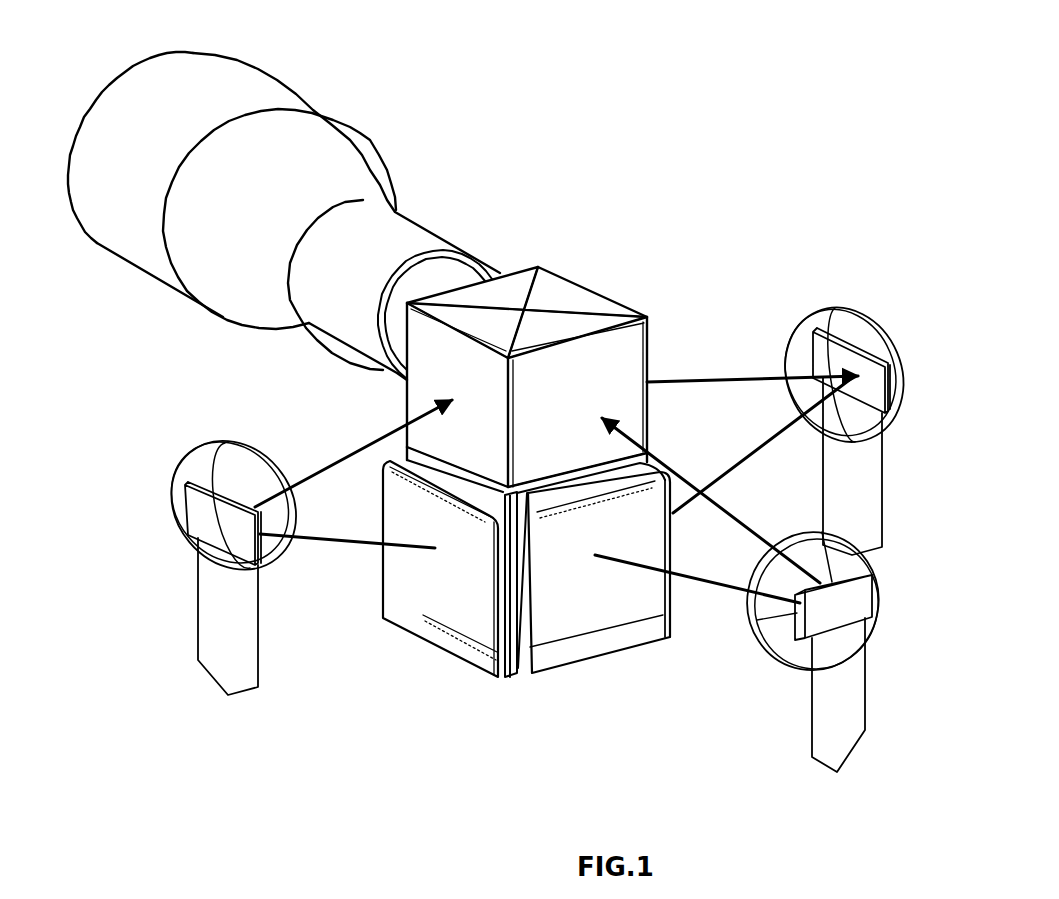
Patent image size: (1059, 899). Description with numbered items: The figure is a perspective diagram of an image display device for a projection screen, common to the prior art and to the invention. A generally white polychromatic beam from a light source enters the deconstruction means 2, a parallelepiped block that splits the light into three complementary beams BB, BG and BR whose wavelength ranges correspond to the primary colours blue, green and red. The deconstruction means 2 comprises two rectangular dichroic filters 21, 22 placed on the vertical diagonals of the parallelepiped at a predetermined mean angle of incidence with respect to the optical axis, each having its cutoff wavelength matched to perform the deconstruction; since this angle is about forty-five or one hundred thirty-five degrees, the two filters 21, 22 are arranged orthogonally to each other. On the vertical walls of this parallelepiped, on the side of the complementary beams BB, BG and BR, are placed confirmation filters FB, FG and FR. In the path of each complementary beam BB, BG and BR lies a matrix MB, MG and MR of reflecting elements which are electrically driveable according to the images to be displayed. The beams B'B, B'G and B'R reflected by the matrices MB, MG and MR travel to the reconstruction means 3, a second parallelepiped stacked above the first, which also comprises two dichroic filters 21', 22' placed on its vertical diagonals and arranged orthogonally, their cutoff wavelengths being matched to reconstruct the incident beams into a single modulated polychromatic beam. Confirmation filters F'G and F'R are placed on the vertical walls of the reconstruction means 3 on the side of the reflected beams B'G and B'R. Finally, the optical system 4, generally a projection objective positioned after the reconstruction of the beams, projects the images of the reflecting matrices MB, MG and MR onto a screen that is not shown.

The optical system 4 is at (372, 130).
The means for reconstructing the reflected complementary beams 3 is at (670, 170).
The means for deconstructing the polychromatic light beam 2 is at (690, 757).
The dichroic filter 21 is at (360, 418).
The dichroic filter 22 is at (498, 610).
The dichroic filter 21' is at (527, 269).
The dichroic filter 22' is at (539, 282).
The confirmation filter F'R is at (457, 327).
The confirmation filter F'G is at (587, 354).
The confirmation filter FR is at (427, 640).
The confirmation filter FG is at (573, 640).
The confirmation filter FB is at (670, 640).
The matrix of reflecting elements MR is at (215, 518).
The matrix of reflecting elements MG is at (843, 602).
The matrix of reflecting elements MB is at (907, 373).
The reflected complementary beam B'R is at (314, 452).
The complementary light beam BR is at (347, 540).
The reflected complementary beam B'G is at (711, 495).
The complementary light beam BG is at (728, 600).
The reflected complementary beam B'B is at (752, 317).
The complementary light beam BB is at (792, 425).